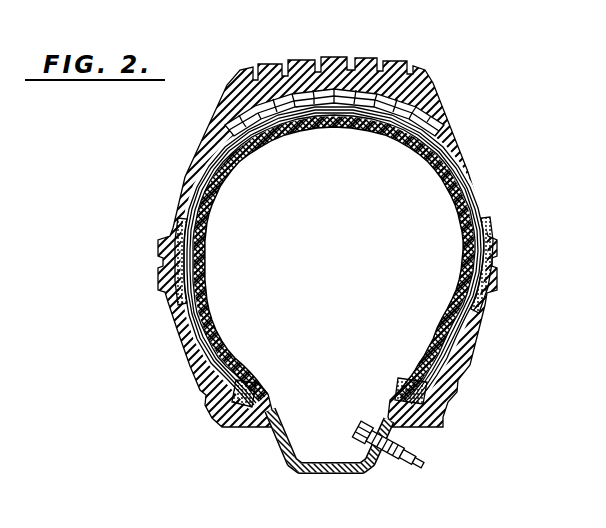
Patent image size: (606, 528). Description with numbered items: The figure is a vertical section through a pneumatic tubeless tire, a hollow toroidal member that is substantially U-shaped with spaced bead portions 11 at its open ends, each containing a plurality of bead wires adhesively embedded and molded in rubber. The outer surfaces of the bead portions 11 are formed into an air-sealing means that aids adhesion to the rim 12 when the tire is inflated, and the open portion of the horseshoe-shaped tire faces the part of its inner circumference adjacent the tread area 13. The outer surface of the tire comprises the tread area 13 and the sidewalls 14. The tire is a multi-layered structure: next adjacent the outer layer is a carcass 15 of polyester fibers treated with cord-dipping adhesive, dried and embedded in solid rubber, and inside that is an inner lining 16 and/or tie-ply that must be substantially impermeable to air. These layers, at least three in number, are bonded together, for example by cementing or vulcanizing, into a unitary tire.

The bead portions 11 is at (257, 382).
The rim 12 is at (313, 475).
The tread area 13 is at (392, 63).
The sidewalls 14 is at (483, 327).
The carcass 15 is at (193, 257).
The inner lining 16 is at (452, 313).